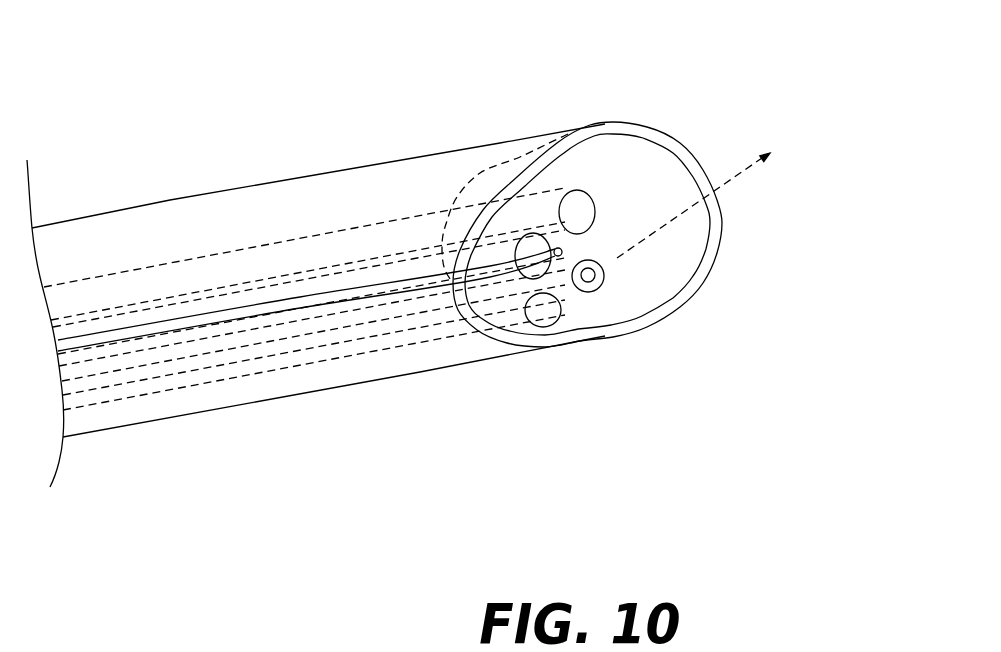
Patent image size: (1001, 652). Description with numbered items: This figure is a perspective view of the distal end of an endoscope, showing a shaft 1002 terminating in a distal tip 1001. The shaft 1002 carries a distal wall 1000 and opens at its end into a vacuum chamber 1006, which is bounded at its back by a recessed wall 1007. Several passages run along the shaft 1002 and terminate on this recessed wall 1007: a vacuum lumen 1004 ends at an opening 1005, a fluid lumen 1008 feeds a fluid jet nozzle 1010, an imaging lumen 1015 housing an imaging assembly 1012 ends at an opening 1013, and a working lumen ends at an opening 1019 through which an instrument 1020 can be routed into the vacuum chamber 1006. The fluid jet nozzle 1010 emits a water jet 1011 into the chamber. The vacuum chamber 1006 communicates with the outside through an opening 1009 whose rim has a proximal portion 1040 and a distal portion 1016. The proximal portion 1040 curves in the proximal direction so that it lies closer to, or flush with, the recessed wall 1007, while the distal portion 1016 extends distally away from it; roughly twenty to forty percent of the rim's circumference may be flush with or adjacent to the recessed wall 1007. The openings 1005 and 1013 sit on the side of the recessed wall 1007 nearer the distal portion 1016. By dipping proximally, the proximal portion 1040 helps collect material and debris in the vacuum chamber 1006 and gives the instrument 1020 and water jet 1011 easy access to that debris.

The distal wall 1000 is at (686, 306).
The distal tip 1001 is at (496, 106).
The shaft 1002 is at (184, 142).
The vacuum lumen 1004 is at (620, 198).
The opening 1005 is at (585, 214).
The vacuum chamber 1006 is at (676, 175).
The recessed wall 1007 is at (597, 240).
The fluid lumen 1008 is at (465, 342).
The opening 1009 is at (620, 135).
The fluid jet nozzle 1010 is at (543, 312).
The water jet 1011 is at (745, 168).
The imaging assembly 1012 is at (593, 277).
The opening 1013 is at (587, 292).
The imaging lumen 1015 is at (582, 170).
The distal portion 1016 is at (556, 150).
The opening 1019 is at (516, 280).
The instrument 1020 is at (510, 283).
The proximal portion 1040 is at (467, 313).